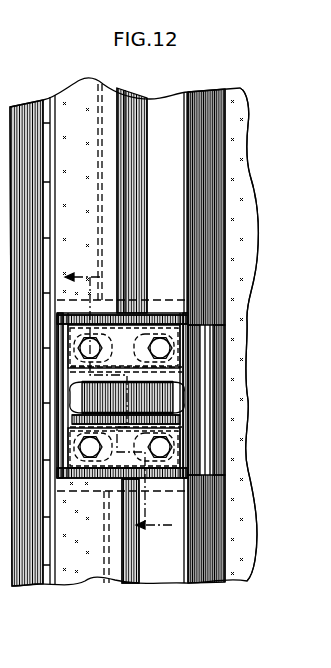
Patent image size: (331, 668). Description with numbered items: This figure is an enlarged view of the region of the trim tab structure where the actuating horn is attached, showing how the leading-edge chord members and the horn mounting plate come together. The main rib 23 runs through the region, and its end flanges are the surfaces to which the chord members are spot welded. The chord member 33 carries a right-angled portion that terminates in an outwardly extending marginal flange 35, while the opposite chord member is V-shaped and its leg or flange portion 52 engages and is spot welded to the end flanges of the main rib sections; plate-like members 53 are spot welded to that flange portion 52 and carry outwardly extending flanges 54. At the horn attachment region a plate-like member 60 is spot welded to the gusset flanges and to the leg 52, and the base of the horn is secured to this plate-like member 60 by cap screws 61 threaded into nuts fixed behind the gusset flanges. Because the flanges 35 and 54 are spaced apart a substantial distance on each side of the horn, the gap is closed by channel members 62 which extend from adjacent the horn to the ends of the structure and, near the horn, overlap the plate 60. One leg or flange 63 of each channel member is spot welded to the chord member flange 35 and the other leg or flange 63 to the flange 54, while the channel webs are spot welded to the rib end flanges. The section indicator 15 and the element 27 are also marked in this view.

The section line 15 is at (92, 272).
The main rib 23 is at (218, 366).
The left wall 27 is at (45, 580).
The chord member 33 is at (210, 142).
The marginal flange 35 is at (197, 92).
The flange portion 52 is at (114, 578).
The plate-like member 53 is at (90, 211).
The outwardly extending flange 54 is at (118, 231).
The plate-like member 60 is at (135, 300).
The cap screw 61 is at (176, 452).
The channel member 62 is at (144, 335).
The leg or flange 63 is at (185, 233).